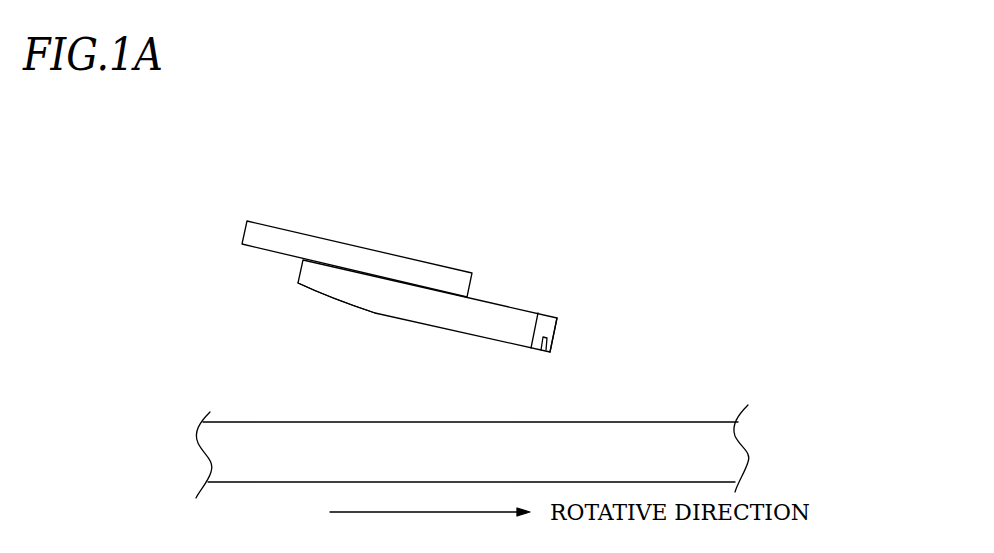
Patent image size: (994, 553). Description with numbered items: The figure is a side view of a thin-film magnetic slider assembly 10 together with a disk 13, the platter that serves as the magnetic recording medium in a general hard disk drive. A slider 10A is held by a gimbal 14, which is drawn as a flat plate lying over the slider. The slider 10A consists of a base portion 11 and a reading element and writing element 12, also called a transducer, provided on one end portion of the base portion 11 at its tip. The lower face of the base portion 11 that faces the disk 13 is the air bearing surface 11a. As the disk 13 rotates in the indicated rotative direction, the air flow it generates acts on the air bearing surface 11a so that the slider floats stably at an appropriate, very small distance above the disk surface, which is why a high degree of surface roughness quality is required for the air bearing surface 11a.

The thin-film magnetic slider assembly 10 is at (534, 265).
The slider 10A is at (711, 250).
The base portion 11 is at (508, 318).
The air bearing surface 11a is at (375, 313).
The reading element and writing element 12 is at (553, 352).
The disk 13 is at (735, 455).
The gimbal 14 is at (312, 247).